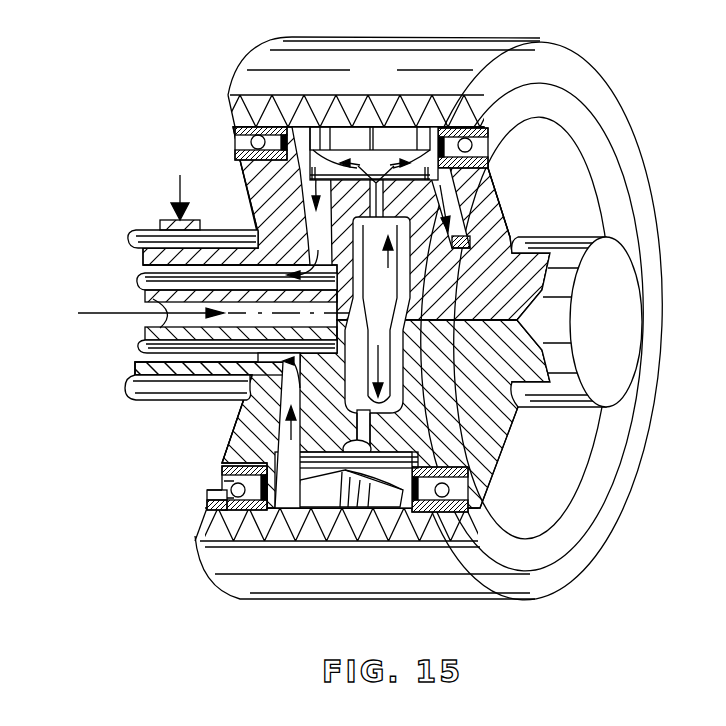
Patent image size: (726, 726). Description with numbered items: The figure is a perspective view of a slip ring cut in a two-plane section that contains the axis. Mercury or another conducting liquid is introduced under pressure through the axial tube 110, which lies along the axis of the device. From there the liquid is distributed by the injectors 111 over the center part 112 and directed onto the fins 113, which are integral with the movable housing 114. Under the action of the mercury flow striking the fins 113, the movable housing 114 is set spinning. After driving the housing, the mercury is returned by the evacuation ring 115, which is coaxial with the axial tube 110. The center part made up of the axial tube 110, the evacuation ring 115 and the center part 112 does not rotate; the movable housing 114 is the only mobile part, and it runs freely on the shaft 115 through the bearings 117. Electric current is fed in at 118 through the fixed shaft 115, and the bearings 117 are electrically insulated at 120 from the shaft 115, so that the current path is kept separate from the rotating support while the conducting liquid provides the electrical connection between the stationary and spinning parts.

The axial tube 110 is at (191, 315).
The injectors 111 is at (382, 312).
The center part 112 is at (248, 440).
The fins 113 is at (358, 140).
The movable housing 114 is at (268, 62).
The evacuation ring 115 is at (152, 258).
The bearings 117 is at (213, 490).
The current feed 118 is at (178, 197).
The electrical insulation 120 is at (222, 468).